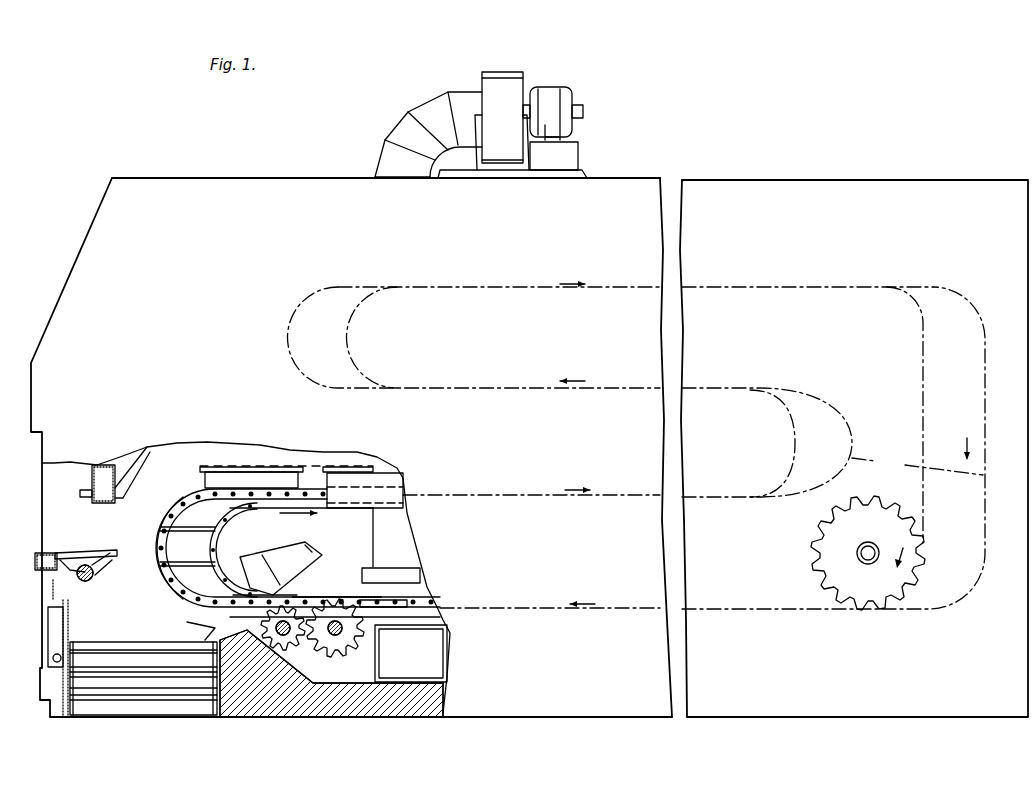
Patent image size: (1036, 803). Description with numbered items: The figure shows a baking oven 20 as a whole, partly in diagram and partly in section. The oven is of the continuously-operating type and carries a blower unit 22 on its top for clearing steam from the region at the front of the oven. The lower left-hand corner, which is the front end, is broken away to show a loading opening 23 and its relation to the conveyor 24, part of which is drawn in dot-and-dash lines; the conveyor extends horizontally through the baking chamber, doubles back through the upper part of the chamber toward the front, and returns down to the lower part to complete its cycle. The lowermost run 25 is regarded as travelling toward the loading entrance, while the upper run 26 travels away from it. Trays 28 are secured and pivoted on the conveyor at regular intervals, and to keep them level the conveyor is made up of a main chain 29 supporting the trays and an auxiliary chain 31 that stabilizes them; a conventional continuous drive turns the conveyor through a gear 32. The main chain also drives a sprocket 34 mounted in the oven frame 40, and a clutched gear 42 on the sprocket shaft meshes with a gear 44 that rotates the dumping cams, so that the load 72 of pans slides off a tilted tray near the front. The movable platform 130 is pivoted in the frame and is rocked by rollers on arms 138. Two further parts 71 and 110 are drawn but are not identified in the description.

The baking oven 20 is at (110, 230).
The blower unit 22 is at (584, 111).
The loading opening 23 is at (50, 505).
The conveyor 24 is at (540, 392).
The lowermost run of the conveyor 25 is at (522, 606).
The upper run of the conveyor 26 is at (548, 498).
The trays 28 is at (322, 557).
The main chain 29 is at (160, 531).
The auxiliary chain 31 is at (214, 529).
The gear 32 is at (822, 557).
The sprocket 34 is at (375, 636).
The oven frame 40 is at (313, 705).
The gear 42 is at (340, 653).
The gear 44 is at (293, 645).
The heater stack 71 is at (125, 682).
The load 72 is at (340, 468).
The bracket 110 is at (86, 582).
The movable platform 130 is at (78, 552).
The arms 138 is at (95, 557).